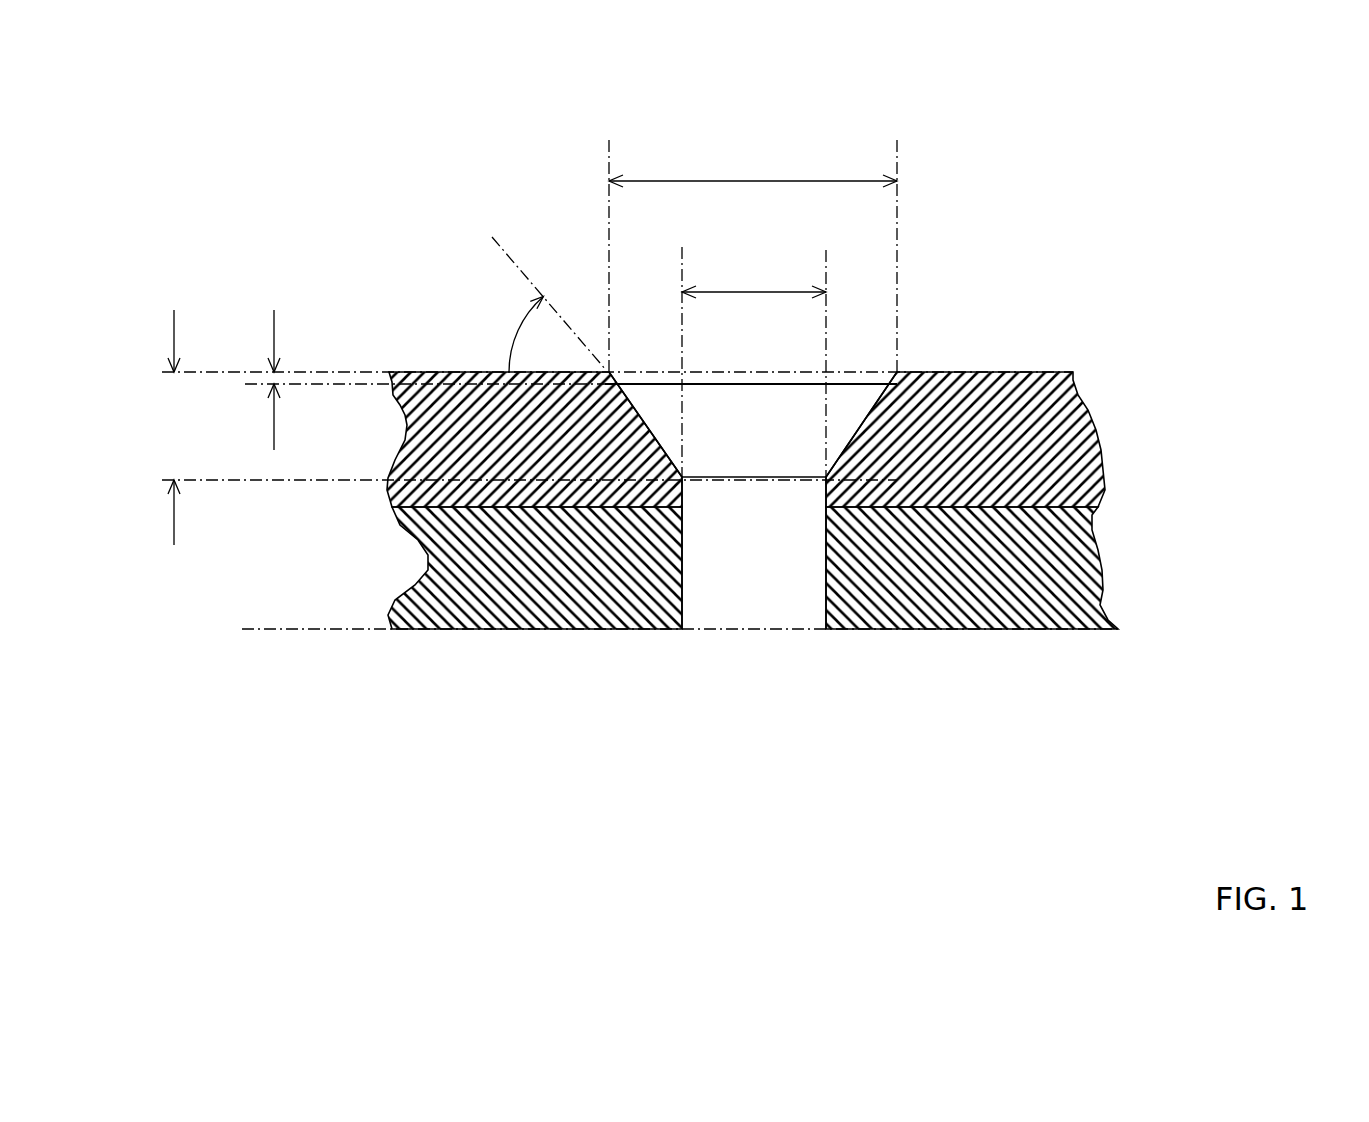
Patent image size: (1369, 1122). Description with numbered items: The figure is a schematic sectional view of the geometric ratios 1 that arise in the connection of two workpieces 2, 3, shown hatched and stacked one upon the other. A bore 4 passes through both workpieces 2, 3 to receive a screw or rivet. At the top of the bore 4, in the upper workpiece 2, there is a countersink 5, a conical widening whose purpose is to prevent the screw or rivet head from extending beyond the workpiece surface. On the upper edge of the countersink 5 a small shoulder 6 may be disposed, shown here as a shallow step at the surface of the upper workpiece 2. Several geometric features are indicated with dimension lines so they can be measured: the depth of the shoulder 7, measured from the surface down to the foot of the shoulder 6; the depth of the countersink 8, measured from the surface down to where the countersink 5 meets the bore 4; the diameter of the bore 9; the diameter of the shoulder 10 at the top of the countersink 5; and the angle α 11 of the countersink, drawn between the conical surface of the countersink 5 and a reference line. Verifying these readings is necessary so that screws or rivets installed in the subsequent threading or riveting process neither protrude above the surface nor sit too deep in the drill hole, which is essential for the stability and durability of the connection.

The geometric ratios 1 is at (1153, 170).
The workpiece 2 is at (1025, 430).
The workpiece 3 is at (1013, 580).
The bore 4 is at (795, 575).
The countersink 5 is at (648, 440).
The shoulder 6 is at (612, 385).
The depth of shoulder 7 is at (425, 346).
The depth of countersink 8 is at (615, 394).
The diameter of bore 9 is at (754, 355).
The diameter of shoulder 10 is at (753, 242).
The angle α of the countersink 11 is at (507, 327).